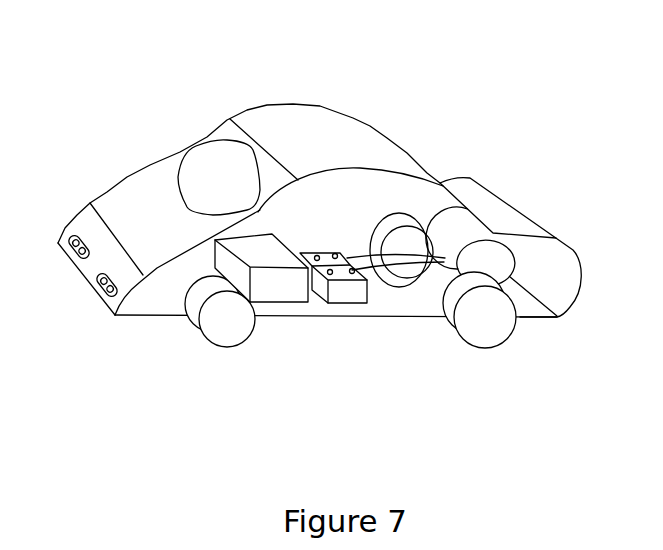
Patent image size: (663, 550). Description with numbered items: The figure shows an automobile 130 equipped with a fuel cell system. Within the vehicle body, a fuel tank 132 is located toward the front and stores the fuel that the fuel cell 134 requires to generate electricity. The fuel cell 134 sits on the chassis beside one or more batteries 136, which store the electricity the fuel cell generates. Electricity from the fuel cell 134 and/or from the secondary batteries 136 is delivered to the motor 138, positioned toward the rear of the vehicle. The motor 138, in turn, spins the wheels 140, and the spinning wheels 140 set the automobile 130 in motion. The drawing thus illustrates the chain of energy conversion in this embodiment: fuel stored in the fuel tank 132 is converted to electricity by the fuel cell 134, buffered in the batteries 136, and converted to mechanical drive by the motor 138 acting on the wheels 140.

The automobile 130 is at (475, 143).
The fuel tank 132 is at (162, 296).
The fuel cell 134 is at (280, 305).
The batteries 136 is at (345, 299).
The motor 138 is at (448, 256).
The wheels 140 is at (492, 344).